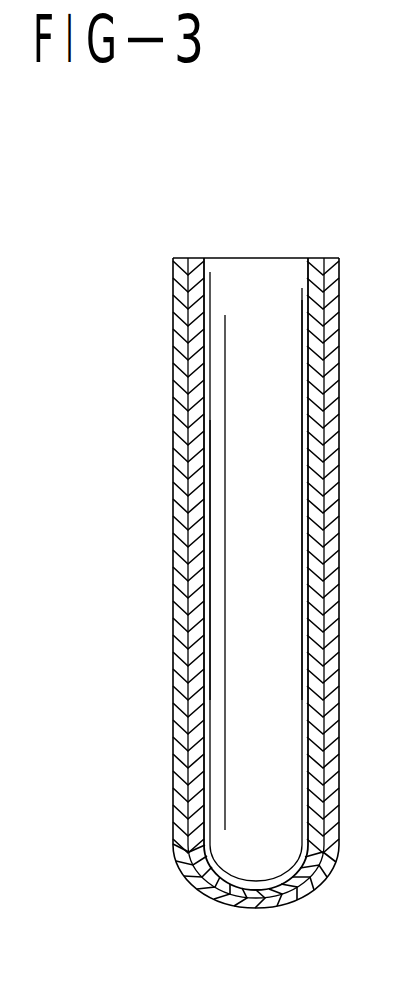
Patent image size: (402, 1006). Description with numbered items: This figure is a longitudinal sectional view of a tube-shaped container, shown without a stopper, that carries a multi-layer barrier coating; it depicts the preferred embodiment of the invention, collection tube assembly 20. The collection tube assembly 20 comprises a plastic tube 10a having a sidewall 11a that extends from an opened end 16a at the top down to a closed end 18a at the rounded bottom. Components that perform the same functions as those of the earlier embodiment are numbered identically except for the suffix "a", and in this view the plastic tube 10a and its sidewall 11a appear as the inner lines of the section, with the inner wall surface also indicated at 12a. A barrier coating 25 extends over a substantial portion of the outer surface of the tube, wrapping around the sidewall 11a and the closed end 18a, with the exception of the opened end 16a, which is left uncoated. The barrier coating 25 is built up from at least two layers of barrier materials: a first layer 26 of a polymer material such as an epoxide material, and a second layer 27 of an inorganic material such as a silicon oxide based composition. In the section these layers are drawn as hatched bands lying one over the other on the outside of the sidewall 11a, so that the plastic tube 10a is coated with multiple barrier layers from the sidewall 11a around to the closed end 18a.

The collection tube assembly 20 is at (142, 260).
The opened end 16a is at (220, 256).
The inner liner 12a is at (303, 296).
The plastic tube 10a is at (228, 370).
The sidewall 11a is at (200, 409).
The barrier coating 25 is at (188, 520).
The first layer 26 is at (188, 613).
The second layer 27 is at (178, 705).
The closed end 18a is at (247, 903).